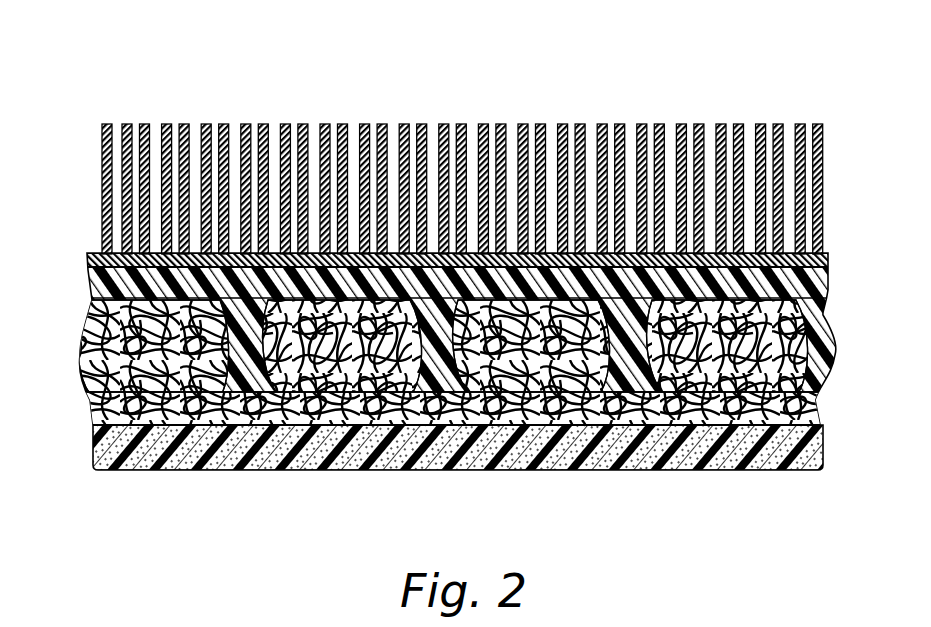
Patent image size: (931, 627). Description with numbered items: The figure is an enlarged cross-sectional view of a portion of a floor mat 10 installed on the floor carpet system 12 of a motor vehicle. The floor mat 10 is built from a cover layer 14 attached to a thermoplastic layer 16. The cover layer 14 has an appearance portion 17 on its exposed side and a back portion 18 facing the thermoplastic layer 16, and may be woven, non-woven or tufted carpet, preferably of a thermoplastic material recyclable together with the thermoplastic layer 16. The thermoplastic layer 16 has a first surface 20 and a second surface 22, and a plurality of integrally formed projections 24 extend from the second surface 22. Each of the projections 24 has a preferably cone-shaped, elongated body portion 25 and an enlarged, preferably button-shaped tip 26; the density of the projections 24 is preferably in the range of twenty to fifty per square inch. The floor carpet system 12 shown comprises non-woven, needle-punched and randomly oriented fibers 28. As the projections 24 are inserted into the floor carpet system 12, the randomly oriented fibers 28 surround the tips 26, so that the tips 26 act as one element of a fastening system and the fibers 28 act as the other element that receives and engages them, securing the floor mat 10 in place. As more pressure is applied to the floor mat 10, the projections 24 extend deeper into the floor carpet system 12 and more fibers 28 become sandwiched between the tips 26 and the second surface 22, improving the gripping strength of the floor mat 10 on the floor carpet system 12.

The floor mat 10 is at (117, 95).
The floor carpet system 12 is at (838, 428).
The cover layer 14 is at (86, 235).
The thermoplastic layer 16 is at (827, 287).
The appearance portion 17 is at (240, 112).
The back portion 18 is at (92, 313).
The first surface 20 is at (828, 255).
The second surface 22 is at (825, 323).
The projections 24 is at (82, 350).
The body portions 25 is at (93, 412).
The tips 26 is at (200, 437).
The fibers 28 is at (815, 397).